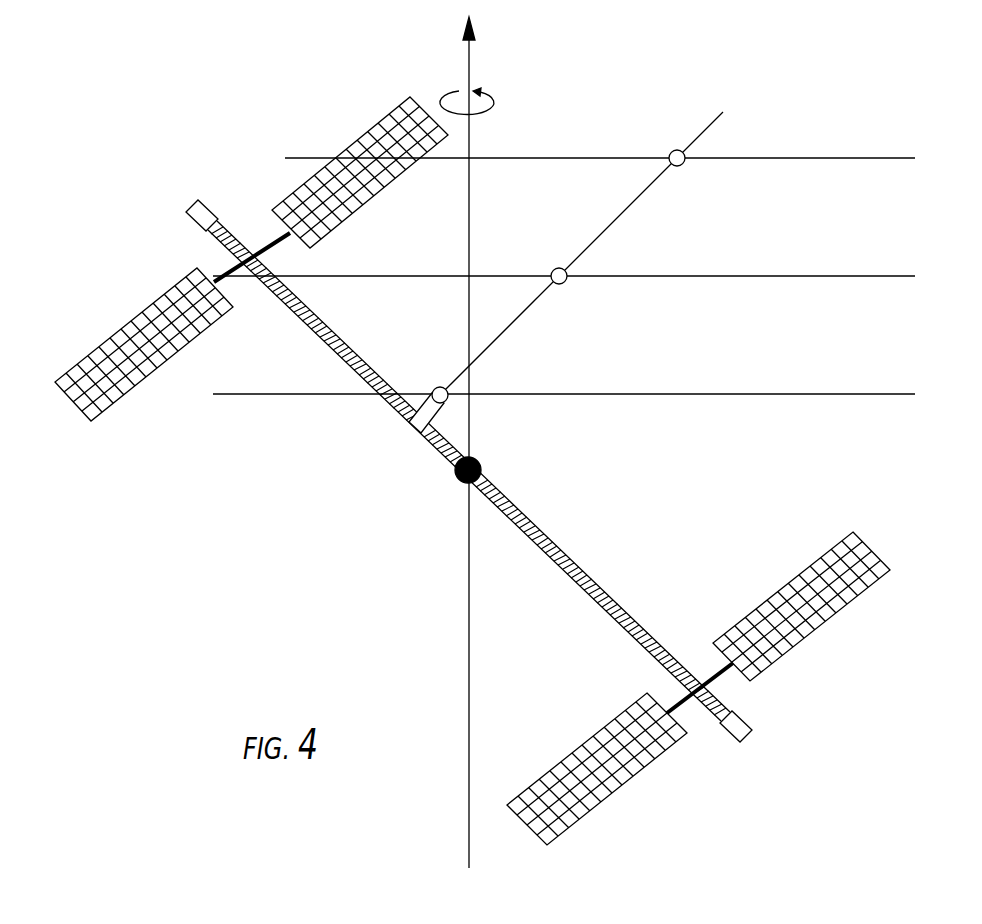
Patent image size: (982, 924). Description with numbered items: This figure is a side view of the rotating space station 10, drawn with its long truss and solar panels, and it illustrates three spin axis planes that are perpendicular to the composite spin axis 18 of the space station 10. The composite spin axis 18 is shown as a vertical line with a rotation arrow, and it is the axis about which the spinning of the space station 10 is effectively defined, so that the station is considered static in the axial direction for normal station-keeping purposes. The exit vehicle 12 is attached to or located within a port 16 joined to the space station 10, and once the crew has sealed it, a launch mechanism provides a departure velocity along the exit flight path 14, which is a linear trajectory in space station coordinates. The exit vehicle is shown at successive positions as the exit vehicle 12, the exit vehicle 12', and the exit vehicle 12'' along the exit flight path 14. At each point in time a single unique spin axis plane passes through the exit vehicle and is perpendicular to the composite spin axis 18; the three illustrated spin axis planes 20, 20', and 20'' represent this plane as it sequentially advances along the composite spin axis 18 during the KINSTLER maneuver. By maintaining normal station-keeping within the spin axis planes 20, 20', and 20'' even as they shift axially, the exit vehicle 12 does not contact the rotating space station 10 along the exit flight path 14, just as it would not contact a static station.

The space station 10 is at (580, 573).
The exit vehicle 12 is at (415, 361).
The exit vehicle 12' is at (531, 251).
The exit vehicle 12'' is at (636, 138).
The exit flight path 14 is at (613, 218).
The port 16 is at (413, 422).
The composite spin axis 18 is at (468, 72).
The spin axis plane 20 is at (564, 368).
The spin axis plane 20' is at (564, 252).
The spin axis plane 20'' is at (600, 134).